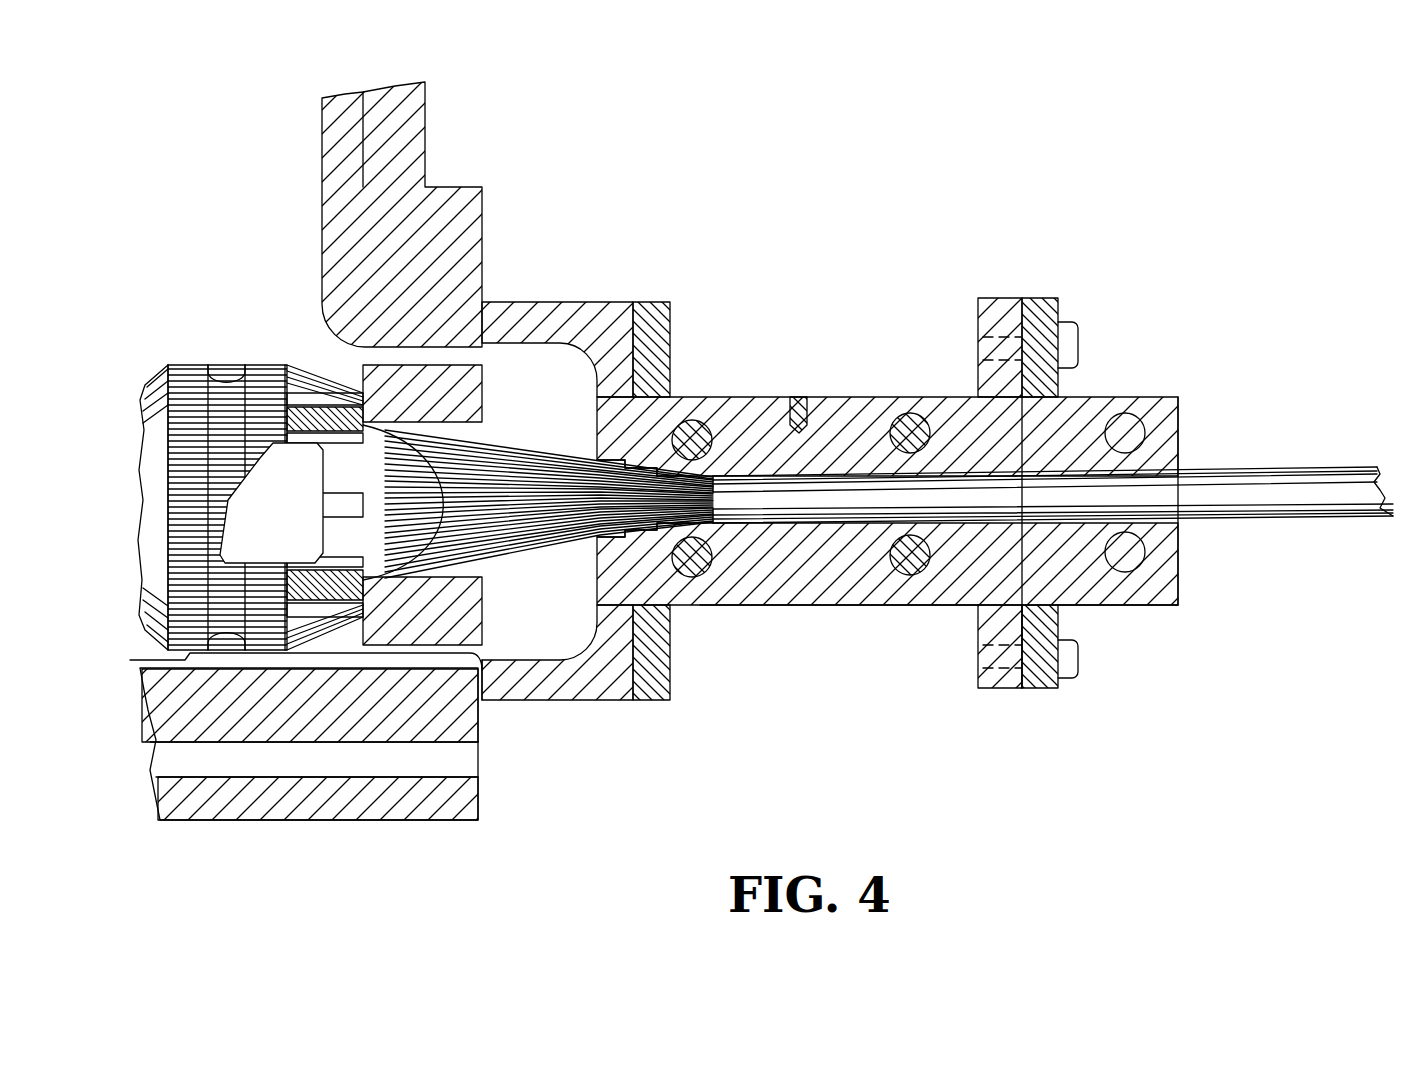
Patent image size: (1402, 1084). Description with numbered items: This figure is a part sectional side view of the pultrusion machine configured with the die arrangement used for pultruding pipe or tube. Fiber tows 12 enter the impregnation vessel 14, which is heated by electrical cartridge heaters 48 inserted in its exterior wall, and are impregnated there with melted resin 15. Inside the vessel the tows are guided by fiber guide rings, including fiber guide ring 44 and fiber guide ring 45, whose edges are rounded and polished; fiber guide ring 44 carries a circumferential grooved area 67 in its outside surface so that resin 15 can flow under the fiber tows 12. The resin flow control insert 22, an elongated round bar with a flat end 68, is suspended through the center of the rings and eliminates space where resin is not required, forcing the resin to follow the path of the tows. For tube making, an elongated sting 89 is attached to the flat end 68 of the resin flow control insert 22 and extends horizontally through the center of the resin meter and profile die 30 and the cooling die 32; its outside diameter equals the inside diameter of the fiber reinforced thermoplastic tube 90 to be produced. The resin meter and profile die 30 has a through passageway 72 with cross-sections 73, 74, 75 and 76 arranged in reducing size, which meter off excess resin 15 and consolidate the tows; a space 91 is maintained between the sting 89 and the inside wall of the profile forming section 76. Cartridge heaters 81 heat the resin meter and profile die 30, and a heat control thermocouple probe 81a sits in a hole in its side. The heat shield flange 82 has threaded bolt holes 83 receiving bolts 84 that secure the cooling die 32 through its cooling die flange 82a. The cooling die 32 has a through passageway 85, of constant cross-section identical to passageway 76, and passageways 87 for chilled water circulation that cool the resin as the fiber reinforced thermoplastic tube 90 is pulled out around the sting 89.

The impregnation vessel 14 is at (448, 167).
The resin 15 is at (292, 232).
The fiber guide ring 44 is at (190, 655).
The circumferential grooved area 67 is at (232, 372).
The fiber tows 12 is at (506, 446).
The resin flow control insert 22 is at (295, 518).
The flat end 68 is at (323, 535).
The cross-section 73 is at (617, 458).
The cross-section 74 is at (652, 470).
The cross-section 75 is at (665, 440).
The through passageway 72 is at (845, 475).
The profile forming section 76 is at (963, 475).
The space 91 is at (965, 475).
The resin meter and profile die 30 is at (826, 605).
The cooling die 32 is at (1105, 605).
The heat control thermocouple probe 81a is at (800, 398).
The cartridge heaters 81 is at (700, 576).
The heat shield flange 82 is at (987, 298).
The threaded bolt holes 83 is at (1000, 690).
The cooling die flange 82a is at (1035, 690).
The bolts 84 is at (1078, 335).
The through passageway 85 is at (1067, 474).
The passageways 87 is at (1145, 557).
The sting 89 is at (757, 500).
The fiber reinforced thermoplastic tube 90 is at (1332, 467).
The fiber guide ring 45 is at (486, 672).
The electrical cartridge heaters 48 is at (480, 750).